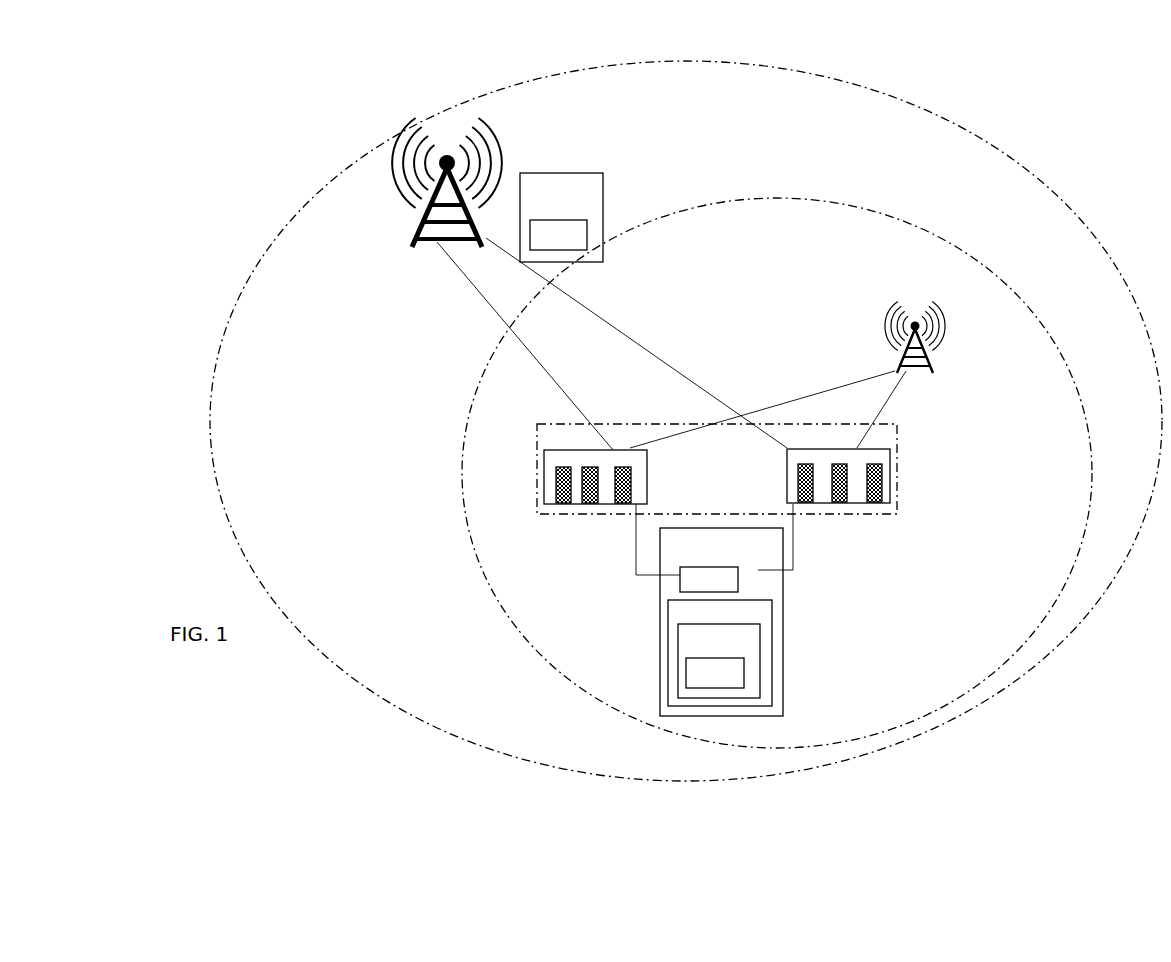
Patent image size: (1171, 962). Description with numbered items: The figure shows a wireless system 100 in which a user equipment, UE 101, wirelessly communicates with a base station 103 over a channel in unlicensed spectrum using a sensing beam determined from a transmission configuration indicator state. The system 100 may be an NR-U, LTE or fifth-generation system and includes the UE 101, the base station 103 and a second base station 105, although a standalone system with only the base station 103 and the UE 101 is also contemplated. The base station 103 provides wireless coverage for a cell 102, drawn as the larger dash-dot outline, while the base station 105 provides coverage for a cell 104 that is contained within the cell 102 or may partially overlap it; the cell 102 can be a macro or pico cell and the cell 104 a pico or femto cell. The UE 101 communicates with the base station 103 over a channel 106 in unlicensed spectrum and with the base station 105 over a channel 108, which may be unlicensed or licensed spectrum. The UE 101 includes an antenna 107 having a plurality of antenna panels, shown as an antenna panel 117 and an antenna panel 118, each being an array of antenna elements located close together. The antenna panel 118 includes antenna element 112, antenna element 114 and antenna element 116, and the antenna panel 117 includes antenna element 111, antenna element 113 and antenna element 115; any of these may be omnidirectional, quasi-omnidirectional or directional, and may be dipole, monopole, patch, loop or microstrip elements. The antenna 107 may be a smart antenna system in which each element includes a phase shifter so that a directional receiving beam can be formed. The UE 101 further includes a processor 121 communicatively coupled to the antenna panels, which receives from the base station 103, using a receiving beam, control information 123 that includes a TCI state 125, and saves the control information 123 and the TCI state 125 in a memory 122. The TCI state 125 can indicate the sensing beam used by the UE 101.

The wireless system 100 is at (305, 96).
The user equipment 101 is at (721, 622).
The cell 102 is at (258, 386).
The base station 103 is at (427, 226).
The cell 104 is at (782, 251).
The base station 105 is at (915, 324).
The channel 106 is at (538, 275).
The antenna 107 is at (897, 515).
The channel 108 is at (873, 395).
The antenna element 111 is at (807, 504).
The antenna element 112 is at (620, 504).
The antenna element 113 is at (840, 504).
The antenna element 114 is at (590, 504).
The antenna element 115 is at (882, 482).
The antenna element 116 is at (563, 506).
The antenna panel 117 is at (787, 464).
The antenna panel 118 is at (647, 476).
The processor 121 is at (709, 579).
The memory 122 is at (720, 653).
The control information 123 is at (640, 435).
The TCI state 125 is at (637, 454).